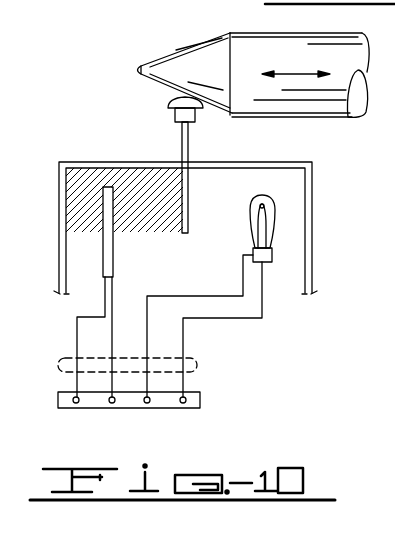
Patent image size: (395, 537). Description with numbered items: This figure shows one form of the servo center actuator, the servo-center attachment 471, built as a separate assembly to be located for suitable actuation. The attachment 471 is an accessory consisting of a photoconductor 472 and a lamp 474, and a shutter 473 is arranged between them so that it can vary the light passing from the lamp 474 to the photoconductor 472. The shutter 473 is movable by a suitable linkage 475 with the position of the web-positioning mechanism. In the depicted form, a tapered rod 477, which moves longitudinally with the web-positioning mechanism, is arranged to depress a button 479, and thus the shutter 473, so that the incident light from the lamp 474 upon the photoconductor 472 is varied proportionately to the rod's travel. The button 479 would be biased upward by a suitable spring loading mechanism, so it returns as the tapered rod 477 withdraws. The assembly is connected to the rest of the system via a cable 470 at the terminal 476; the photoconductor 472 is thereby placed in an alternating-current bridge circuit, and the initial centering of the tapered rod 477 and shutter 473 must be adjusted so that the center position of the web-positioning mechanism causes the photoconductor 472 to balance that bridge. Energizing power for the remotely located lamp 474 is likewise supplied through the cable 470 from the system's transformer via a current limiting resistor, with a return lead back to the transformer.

The cable 470 is at (195, 361).
The servo-center attachment 471 is at (324, 212).
The photoconductor 472 is at (114, 261).
The shutter 473 is at (189, 195).
The lamp 474 is at (252, 232).
The linkage 475 is at (134, 96).
The terminal 476 is at (195, 397).
The tapered rod 477 is at (233, 42).
The button 479 is at (177, 113).